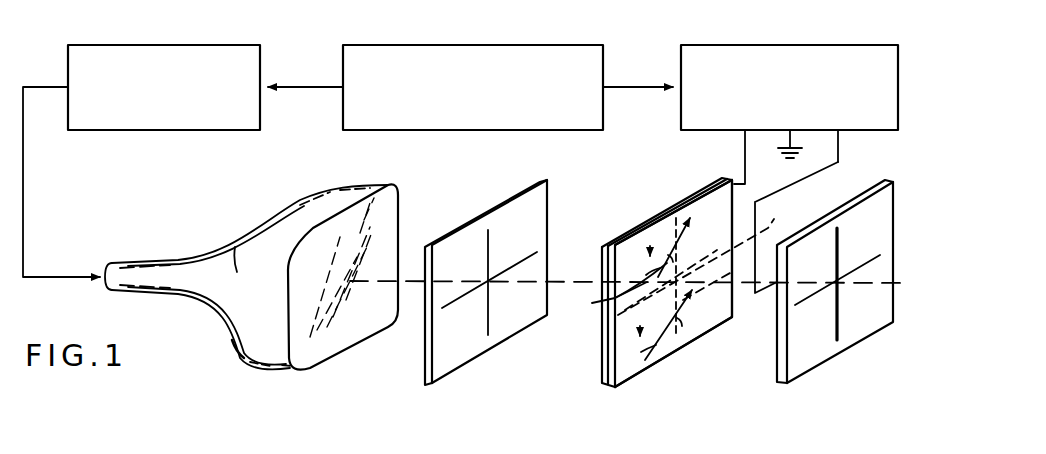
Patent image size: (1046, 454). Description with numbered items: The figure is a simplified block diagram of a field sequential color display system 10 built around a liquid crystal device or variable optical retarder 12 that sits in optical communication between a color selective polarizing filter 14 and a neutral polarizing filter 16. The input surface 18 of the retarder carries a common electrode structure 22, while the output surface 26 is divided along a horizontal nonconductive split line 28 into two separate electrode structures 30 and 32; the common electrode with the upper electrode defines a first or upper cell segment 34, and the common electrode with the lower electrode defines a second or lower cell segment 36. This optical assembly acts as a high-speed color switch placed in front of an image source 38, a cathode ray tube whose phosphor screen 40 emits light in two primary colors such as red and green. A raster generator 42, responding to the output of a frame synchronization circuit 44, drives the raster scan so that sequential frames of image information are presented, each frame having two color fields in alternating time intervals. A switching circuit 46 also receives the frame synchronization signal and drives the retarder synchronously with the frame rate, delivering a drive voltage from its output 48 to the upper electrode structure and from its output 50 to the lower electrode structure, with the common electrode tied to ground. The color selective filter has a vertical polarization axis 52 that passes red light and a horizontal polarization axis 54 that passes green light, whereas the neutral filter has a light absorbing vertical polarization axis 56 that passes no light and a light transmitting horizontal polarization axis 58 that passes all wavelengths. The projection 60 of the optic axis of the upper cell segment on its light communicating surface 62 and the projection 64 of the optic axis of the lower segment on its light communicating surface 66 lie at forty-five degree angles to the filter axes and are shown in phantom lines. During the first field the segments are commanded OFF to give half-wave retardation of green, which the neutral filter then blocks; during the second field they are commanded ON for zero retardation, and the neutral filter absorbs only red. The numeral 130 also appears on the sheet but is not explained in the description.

The field sequential color display system 10 is at (500, 395).
The variable optical retarder 12 is at (637, 371).
The color selective polarizing filter 14 is at (457, 370).
The neutral polarizing filter 16 is at (812, 368).
The input surface 18 is at (613, 238).
The common electrode structure 22 is at (658, 207).
The output surface 26 is at (717, 318).
The horizontal nonconductive split line 28 is at (703, 256).
The electrode structure 30 is at (697, 199).
The electrode structure 32 is at (615, 386).
The first or upper cell segment 34 is at (735, 212).
The second or lower cell segment 36 is at (698, 331).
The image source 38 is at (181, 302).
The phosphor screen 40 is at (322, 350).
The raster generator 42 is at (164, 45).
The frame synchronization circuit 44 is at (442, 45).
The switching circuit 46 is at (790, 45).
The output 48 is at (745, 148).
The output 50 is at (838, 142).
The color selective vertical polarization axis 52 is at (486, 255).
The color selective horizontal polarization axis 54 is at (525, 252).
The light absorbing vertical polarization axis 56 is at (838, 245).
The light transmitting horizontal polarization axis 58 is at (870, 257).
The projection of the optic axis 60 is at (616, 289).
The light communicating surface 62 is at (648, 230).
The projection of the optic axis 64 is at (672, 334).
The light communicating surface 66 is at (650, 360).
The reference numeral 130 is at (216, 451).